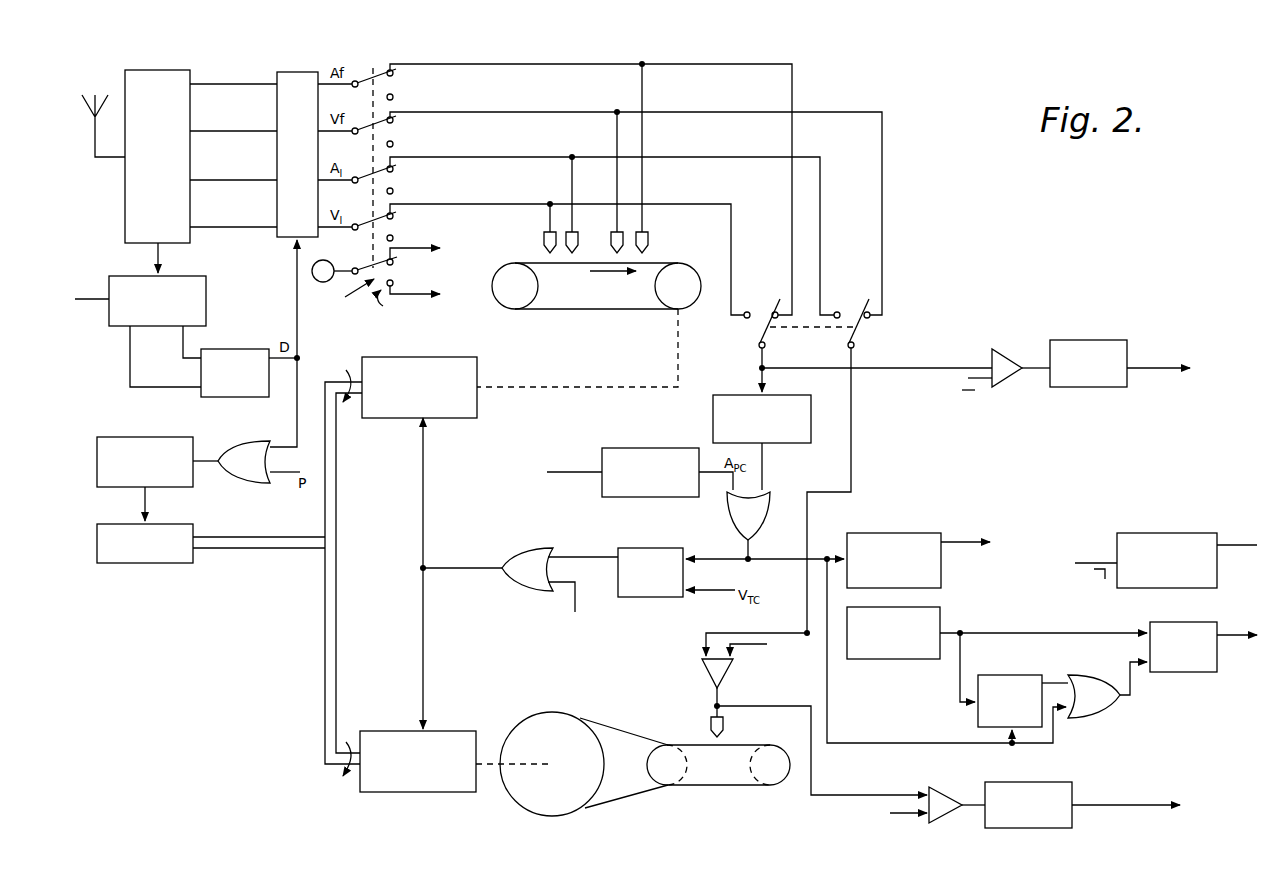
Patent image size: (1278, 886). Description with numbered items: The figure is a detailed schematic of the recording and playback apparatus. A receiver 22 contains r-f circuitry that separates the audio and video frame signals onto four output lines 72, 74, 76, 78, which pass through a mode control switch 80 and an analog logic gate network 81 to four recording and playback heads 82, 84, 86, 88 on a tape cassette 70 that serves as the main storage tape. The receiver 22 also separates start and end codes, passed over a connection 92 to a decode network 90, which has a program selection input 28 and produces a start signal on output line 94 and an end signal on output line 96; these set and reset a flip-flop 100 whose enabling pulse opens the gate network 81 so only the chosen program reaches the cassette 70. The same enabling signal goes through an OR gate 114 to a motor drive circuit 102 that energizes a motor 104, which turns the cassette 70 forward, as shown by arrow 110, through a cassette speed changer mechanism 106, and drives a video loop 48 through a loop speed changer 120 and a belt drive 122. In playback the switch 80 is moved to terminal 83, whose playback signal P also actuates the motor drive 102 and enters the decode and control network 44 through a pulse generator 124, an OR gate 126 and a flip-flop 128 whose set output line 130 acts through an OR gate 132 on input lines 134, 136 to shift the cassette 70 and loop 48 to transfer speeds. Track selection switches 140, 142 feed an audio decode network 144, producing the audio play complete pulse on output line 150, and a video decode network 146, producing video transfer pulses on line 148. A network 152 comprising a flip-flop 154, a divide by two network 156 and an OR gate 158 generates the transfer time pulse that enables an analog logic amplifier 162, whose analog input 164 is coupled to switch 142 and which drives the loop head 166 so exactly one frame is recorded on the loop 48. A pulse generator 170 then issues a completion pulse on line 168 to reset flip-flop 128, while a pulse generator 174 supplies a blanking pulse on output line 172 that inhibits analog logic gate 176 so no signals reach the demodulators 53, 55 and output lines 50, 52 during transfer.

The receiver 22 is at (120, 202).
The output line 72 is at (218, 84).
The output line 74 is at (218, 131).
The output line 76 is at (218, 180).
The output line 78 is at (218, 227).
The analog logic gate network 81 is at (288, 72).
The mode control switch 80 is at (342, 301).
The terminal 83 is at (398, 281).
The recording and playback head 86 is at (544, 242).
The recording and playback head 88 is at (575, 238).
The recording and playback head 84 is at (611, 242).
The recording and playback head 82 is at (648, 241).
The tape cassette 70 is at (596, 296).
The arrow 110 is at (605, 277).
The receiver to decode line 92 is at (163, 254).
The decode network 90 is at (208, 297).
The input 28 is at (98, 303).
The output line 94 is at (183, 338).
The output line 96 is at (130, 354).
The flip-flop 100 is at (242, 398).
The motor drive circuit 102 is at (127, 437).
The OR gate 114 is at (250, 484).
The motor 104 is at (120, 563).
The cassette speed changer mechanism 106 is at (478, 408).
The input line 134 is at (420, 440).
The input line 136 is at (420, 682).
The loop speed changer 120 is at (410, 793).
The belt drive 122 is at (580, 813).
The video loop 48 is at (735, 787).
The pulse generator 124 is at (665, 448).
The decode and control network 44 is at (568, 512).
The set output line 130 is at (586, 557).
The OR gate 132 is at (531, 594).
The flip-flop 128 is at (645, 598).
The OR gate 126 is at (754, 534).
The output line 150 is at (748, 472).
The audio decode network 144 is at (812, 432).
The track selection switch 140 is at (768, 347).
The track selection switch 142 is at (858, 345).
The analog logic gate 176 is at (1012, 382).
The demodulator 53 is at (1090, 340).
The line 50 is at (1153, 365).
The pulse generator 174 is at (904, 532).
The output line 172 is at (950, 548).
The pulse generator 170 is at (1165, 533).
The line 168 is at (1222, 553).
The video decode network 146 is at (870, 660).
The line 148 is at (953, 648).
The divide by two network 156 is at (1004, 675).
The OR gate 158 is at (1110, 714).
The network 152 is at (1088, 722).
The flip-flop 154 is at (1195, 672).
The analog input 164 is at (700, 643).
The analog logic amplifier 162 is at (735, 672).
The loop head 166 is at (712, 728).
The demodulator 55 is at (1012, 782).
The line 52 is at (1100, 805).